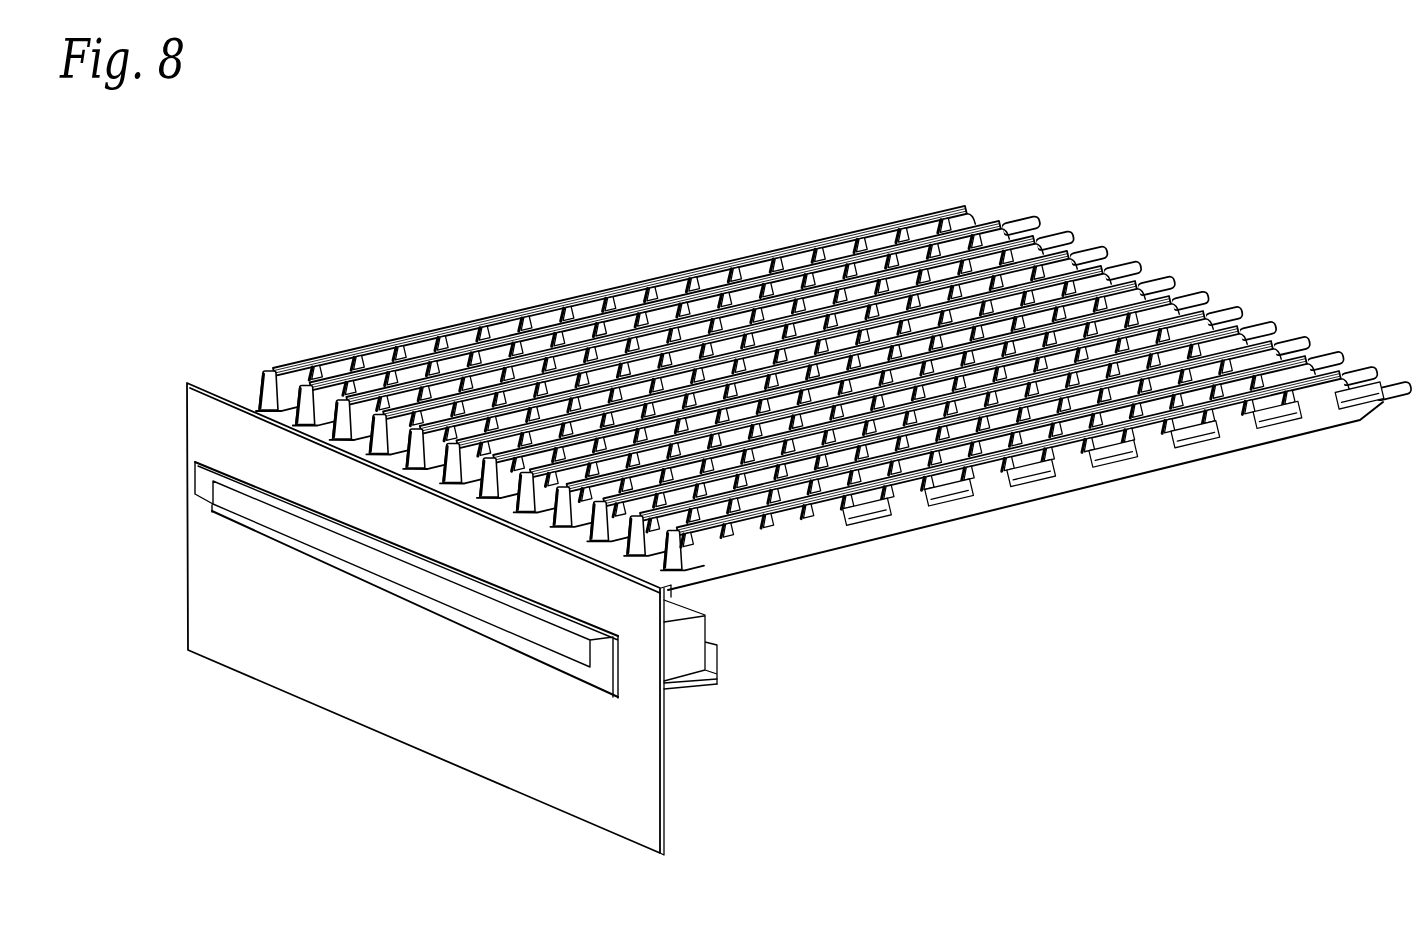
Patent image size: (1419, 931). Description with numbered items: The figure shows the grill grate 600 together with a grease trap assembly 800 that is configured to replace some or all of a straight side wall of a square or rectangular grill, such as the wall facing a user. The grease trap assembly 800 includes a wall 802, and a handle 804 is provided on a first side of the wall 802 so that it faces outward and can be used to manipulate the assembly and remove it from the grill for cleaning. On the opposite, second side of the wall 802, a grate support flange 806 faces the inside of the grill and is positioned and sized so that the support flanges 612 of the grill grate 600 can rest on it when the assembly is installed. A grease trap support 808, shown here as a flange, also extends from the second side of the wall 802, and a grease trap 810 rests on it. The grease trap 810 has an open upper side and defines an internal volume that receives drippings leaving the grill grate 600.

The grill grate 600 is at (763, 350).
The support flanges 612 is at (313, 423).
The grease trap assembly 800 is at (475, 619).
The wall 802 is at (234, 633).
The handle 804 is at (222, 497).
The grate support flange 806 is at (678, 586).
The grease trap support 808 is at (688, 683).
The grease trap 810 is at (690, 643).